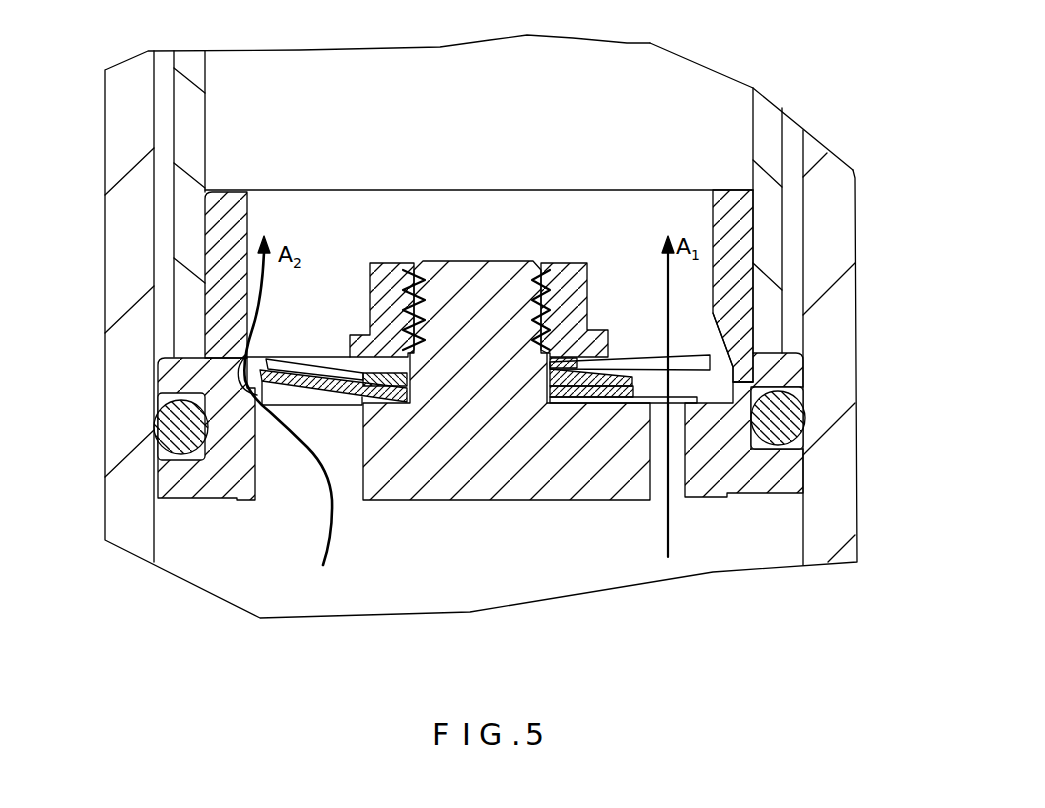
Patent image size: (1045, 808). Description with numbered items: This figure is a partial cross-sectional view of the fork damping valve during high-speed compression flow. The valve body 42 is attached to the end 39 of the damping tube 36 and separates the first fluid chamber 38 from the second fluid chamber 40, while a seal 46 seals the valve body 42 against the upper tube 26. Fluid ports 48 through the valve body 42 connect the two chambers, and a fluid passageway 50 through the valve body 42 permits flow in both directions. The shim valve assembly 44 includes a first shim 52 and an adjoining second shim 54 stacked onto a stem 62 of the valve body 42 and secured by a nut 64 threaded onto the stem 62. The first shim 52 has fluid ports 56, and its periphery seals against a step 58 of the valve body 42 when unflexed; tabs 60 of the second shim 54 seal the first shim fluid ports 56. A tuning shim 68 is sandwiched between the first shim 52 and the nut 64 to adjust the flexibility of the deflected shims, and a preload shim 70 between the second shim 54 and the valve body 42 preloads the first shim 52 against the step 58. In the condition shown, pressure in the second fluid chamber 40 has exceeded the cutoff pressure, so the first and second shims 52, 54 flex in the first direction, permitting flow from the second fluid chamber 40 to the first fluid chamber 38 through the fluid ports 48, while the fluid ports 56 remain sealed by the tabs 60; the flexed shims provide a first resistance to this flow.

The upper tube 26 is at (830, 235).
The damping tube 36 is at (763, 160).
The first fluid chamber 38 is at (680, 110).
The end 39 is at (760, 344).
The second fluid chamber 40 is at (757, 540).
The valve body 42 is at (729, 274).
The shim valve assembly 44 is at (283, 340).
The seal 46 is at (795, 410).
The fluid ports 48 is at (277, 470).
The fluid passageway 50 is at (680, 480).
The first shim 52 is at (620, 370).
The second shim 54 is at (620, 385).
The fluid ports 56 is at (305, 370).
The step 58 is at (240, 393).
The tabs 60 is at (335, 373).
The stem 62 is at (473, 287).
The nut 64 is at (560, 280).
The tuning shim 68 is at (395, 370).
The preload shim 70 is at (358, 443).